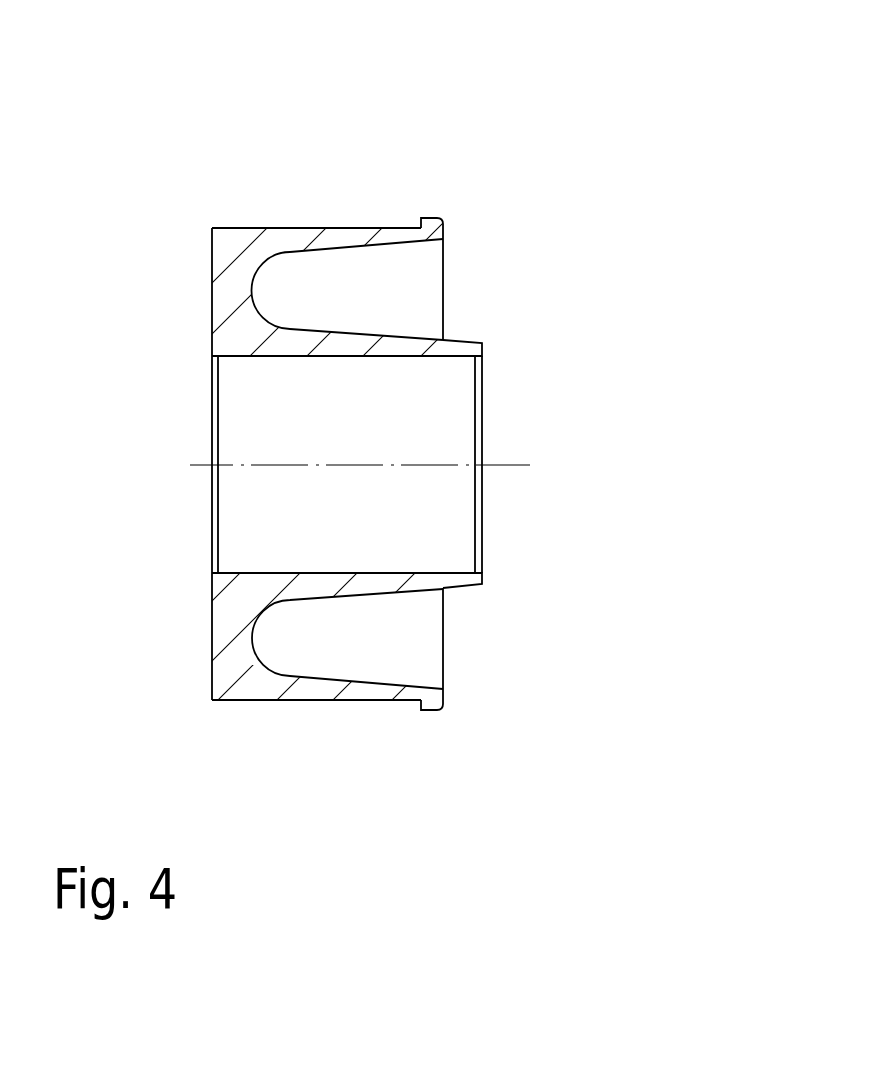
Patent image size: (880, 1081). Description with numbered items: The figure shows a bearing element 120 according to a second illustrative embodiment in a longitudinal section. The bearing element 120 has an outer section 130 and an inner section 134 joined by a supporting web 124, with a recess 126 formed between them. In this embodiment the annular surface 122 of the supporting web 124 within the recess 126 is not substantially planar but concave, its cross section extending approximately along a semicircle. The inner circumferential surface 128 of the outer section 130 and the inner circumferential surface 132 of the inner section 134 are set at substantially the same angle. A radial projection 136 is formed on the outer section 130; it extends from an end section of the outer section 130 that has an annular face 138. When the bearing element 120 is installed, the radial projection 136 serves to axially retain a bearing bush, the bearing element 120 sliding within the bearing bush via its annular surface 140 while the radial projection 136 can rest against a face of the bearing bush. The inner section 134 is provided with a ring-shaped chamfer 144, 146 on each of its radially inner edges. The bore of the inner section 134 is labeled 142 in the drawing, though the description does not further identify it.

The bearing element 120 is at (319, 450).
The annular surface 122 is at (274, 256).
The supporting web 124 is at (228, 291).
The recess 126 is at (391, 232).
The inner circumferential surface 128 is at (400, 247).
The outer section 130 is at (346, 236).
The inner circumferential surface 132 is at (417, 333).
The inner section 134 is at (340, 345).
The radial projection 136 is at (433, 712).
The annular face 138 is at (425, 687).
The annular surface 140 is at (315, 700).
The bore surface 142 is at (438, 529).
The ring-shaped chamfer 144 is at (482, 441).
The ring-shaped chamfer 146 is at (213, 422).